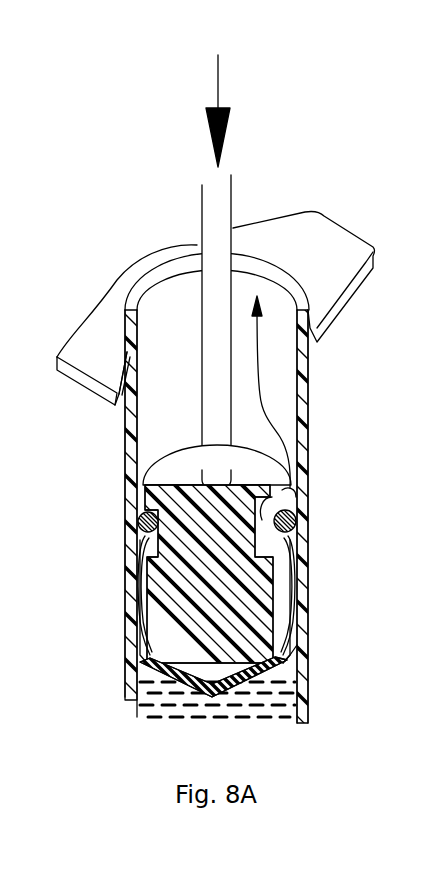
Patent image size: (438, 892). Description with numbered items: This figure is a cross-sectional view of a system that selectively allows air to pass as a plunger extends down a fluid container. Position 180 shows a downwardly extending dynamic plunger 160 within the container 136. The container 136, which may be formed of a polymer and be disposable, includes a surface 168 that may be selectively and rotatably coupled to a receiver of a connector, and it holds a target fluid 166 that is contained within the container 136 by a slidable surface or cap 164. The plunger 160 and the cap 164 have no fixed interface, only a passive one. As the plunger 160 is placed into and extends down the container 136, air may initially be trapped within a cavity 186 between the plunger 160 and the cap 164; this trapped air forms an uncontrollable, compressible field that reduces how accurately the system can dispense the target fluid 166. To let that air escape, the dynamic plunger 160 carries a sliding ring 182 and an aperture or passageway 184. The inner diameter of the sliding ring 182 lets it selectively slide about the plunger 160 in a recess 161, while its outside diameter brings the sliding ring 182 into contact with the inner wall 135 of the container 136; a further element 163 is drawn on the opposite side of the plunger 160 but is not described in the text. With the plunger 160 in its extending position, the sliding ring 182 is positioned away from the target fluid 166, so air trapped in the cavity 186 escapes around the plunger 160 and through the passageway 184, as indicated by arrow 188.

The position 180 is at (128, 218).
The surface 168 is at (87, 342).
The arrow 188 is at (262, 395).
The inner wall 135 is at (155, 432).
The passageway 184 is at (285, 500).
The sliding ring 182 is at (257, 523).
The left sealing lip 163 is at (150, 555).
The recess 161 is at (282, 553).
The plunger 160 is at (200, 583).
The container 136 is at (131, 637).
The cavity 186 is at (297, 645).
The cap 164 is at (270, 675).
The target fluid 166 is at (172, 713).